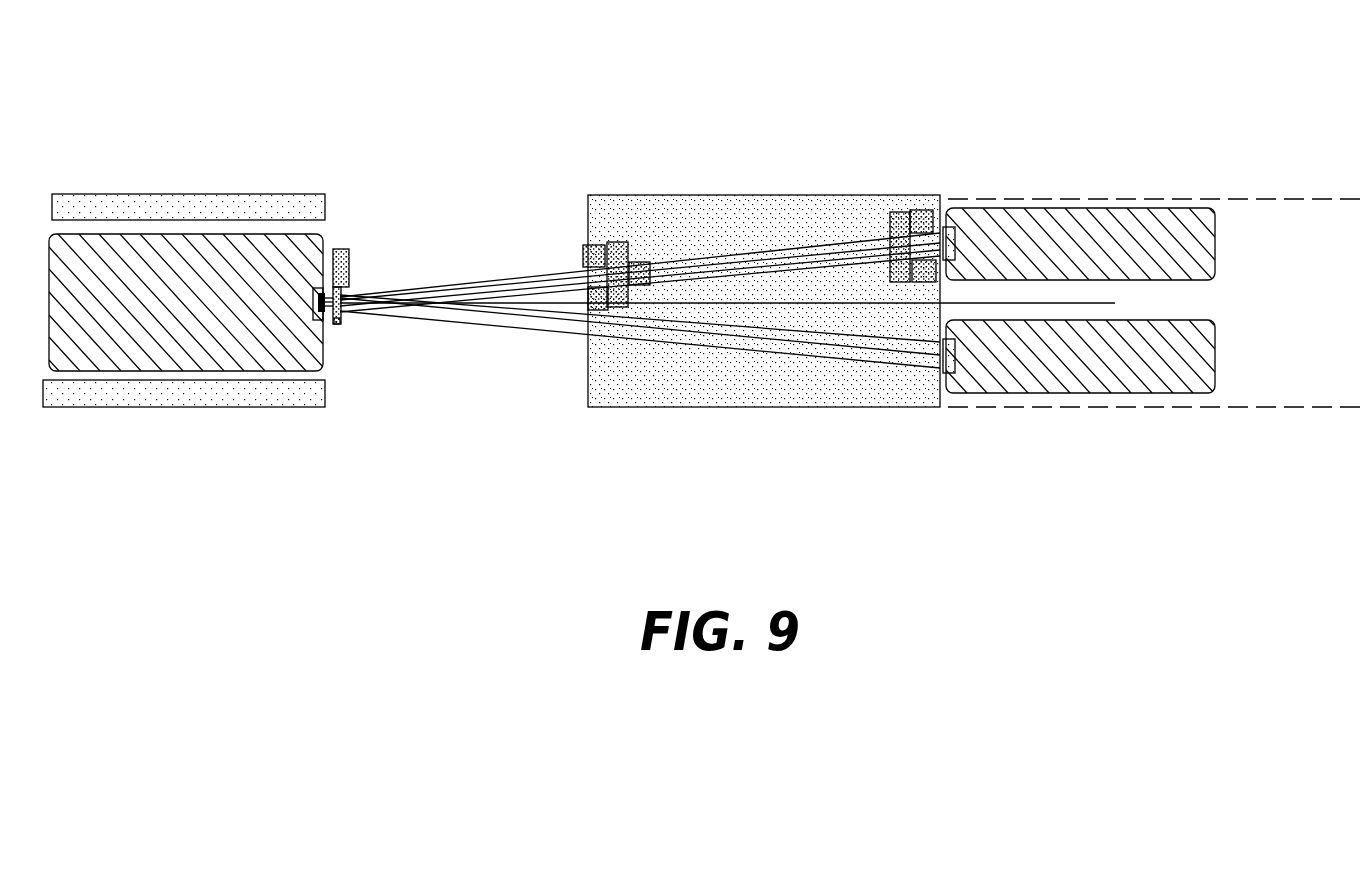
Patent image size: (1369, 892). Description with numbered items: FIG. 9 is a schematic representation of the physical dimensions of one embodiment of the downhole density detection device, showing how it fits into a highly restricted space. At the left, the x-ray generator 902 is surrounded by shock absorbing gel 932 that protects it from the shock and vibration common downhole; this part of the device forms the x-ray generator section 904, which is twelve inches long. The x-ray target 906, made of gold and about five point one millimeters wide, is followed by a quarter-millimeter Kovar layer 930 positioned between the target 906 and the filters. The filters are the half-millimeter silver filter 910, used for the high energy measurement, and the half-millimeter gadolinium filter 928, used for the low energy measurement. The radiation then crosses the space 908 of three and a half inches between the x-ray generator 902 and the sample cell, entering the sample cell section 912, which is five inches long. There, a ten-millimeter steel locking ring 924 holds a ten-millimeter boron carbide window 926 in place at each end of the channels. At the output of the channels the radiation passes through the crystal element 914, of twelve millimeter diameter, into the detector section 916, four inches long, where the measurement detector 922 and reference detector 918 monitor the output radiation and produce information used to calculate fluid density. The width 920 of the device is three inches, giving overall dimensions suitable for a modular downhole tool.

The x-ray generator 902 is at (179, 306).
The x-ray generator section 904 is at (42, 448).
The x-ray target 906 is at (321, 321).
The space 908 is at (323, 490).
The Ag filter 910 is at (353, 327).
The sample cell section 912 is at (583, 448).
The crystal 914 is at (960, 272).
The detector section 916 is at (1220, 448).
The reference detector 918 is at (1210, 352).
The width 920 is at (1352, 200).
The measurement detector 922 is at (1210, 240).
The steel locking ring 924 is at (591, 241).
The boron carbide window 926 is at (632, 263).
The Gd filter 928 is at (359, 249).
The Kovar layer 930 is at (323, 286).
The shock absorbing gel 932 is at (235, 226).